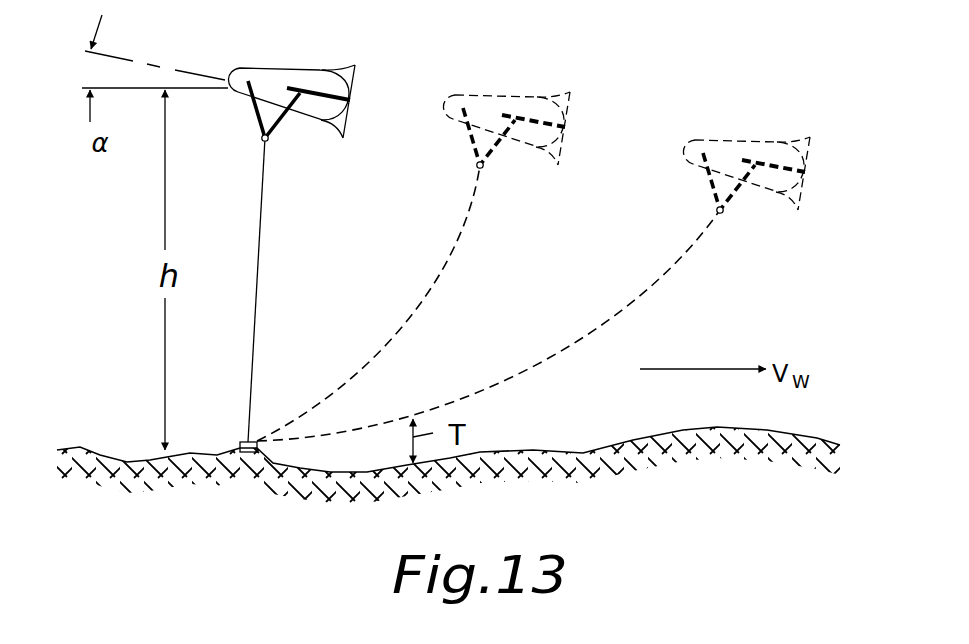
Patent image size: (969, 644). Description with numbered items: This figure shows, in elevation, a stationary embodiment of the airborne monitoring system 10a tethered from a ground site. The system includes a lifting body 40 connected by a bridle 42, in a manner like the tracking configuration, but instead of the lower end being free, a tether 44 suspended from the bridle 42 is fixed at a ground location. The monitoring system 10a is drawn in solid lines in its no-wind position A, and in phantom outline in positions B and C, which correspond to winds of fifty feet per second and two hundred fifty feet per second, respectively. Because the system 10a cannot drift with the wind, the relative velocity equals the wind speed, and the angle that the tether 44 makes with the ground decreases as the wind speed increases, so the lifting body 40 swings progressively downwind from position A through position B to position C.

The monitoring system 10a is at (304, 80).
The lifting body 40 is at (270, 66).
The bridle 42 is at (253, 113).
The tether 44 is at (251, 323).
The no-wind position A is at (304, 98).
The position in 50 fps wind B is at (509, 171).
The position in 250 fps wind C is at (751, 204).